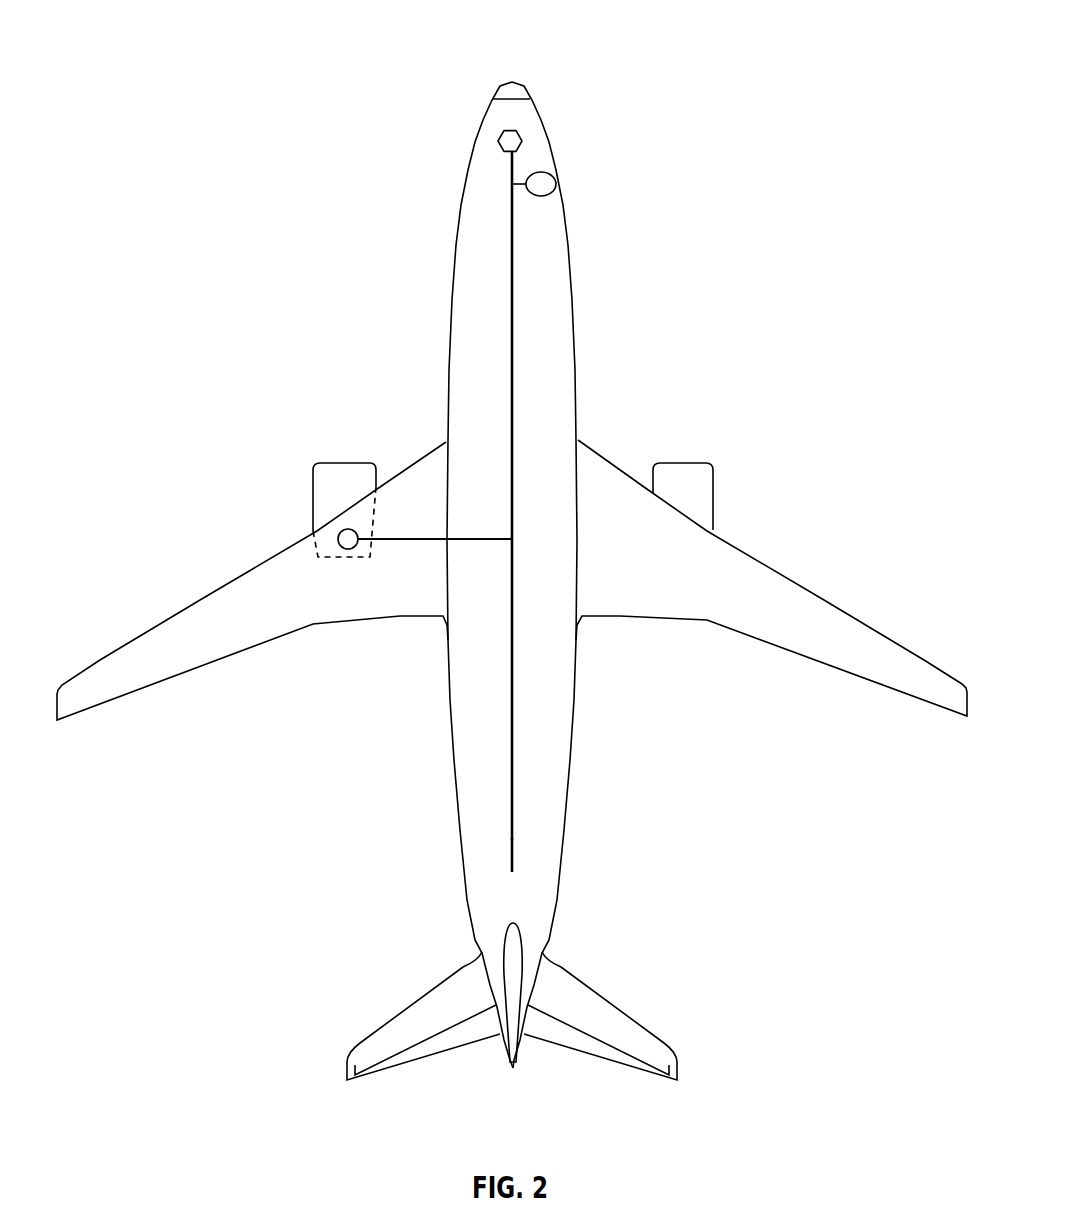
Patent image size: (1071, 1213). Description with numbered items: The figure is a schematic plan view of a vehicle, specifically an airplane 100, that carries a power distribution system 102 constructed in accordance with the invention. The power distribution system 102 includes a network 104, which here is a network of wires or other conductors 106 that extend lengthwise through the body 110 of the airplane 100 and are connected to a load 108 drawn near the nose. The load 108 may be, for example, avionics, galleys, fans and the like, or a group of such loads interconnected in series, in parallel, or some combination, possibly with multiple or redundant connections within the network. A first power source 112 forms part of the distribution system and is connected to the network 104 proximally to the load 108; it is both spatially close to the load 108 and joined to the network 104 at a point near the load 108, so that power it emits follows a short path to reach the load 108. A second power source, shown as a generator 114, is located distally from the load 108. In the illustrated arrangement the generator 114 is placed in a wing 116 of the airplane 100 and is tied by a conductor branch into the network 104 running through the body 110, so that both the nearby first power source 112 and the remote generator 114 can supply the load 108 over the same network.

The airplane 100 is at (512, 581).
The power distribution system 102 is at (478, 478).
The network 104 is at (508, 324).
The wires or other conductors 106 is at (514, 765).
The load 108 is at (522, 141).
The body 110 is at (560, 718).
The first power source 112 is at (547, 171).
The generator 114 is at (338, 542).
The wing 116 is at (185, 675).